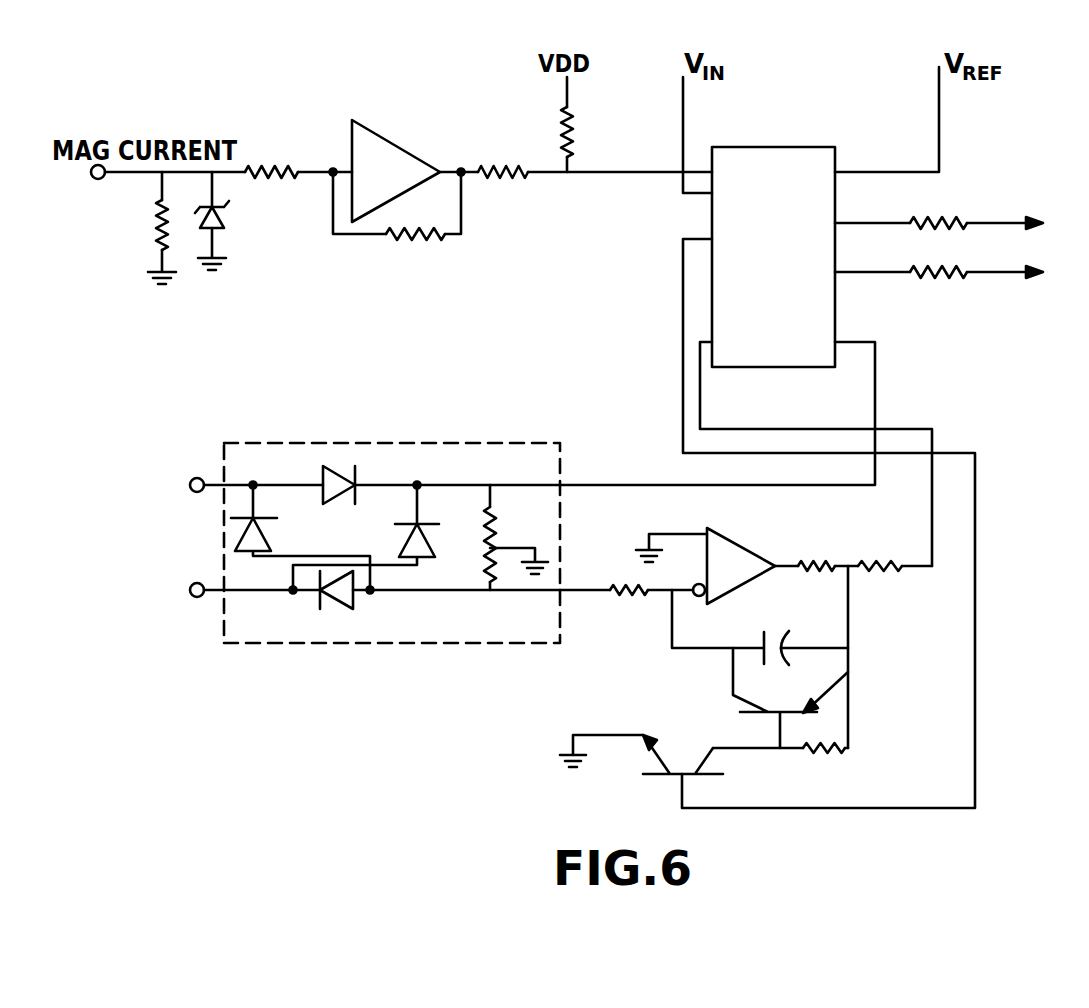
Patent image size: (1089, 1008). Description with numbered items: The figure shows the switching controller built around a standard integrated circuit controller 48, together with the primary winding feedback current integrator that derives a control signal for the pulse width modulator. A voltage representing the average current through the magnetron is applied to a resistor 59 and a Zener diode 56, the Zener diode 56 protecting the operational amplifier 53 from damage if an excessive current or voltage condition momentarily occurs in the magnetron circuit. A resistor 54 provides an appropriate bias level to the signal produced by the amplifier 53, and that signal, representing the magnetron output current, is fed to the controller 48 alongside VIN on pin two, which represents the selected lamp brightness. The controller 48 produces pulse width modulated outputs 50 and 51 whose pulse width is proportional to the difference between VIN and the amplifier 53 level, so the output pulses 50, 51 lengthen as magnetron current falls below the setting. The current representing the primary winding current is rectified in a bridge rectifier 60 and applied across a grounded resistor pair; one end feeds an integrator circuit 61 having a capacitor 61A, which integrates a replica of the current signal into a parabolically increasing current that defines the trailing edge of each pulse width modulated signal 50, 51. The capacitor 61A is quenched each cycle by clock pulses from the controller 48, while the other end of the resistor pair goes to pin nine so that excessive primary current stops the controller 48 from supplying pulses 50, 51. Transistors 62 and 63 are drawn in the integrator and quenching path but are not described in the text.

The controller 48 is at (803, 261).
The pulse width modulated output 50 is at (900, 223).
The pulse width modulated output 51 is at (900, 276).
The operational amplifier 53 is at (419, 158).
The resistor 54 is at (568, 146).
The Zener diode 56 is at (212, 235).
The resistor 59 is at (160, 236).
The bridge rectifier 60 is at (538, 443).
The integrator circuit 61 is at (754, 553).
The capacitor 61A is at (781, 641).
The transistor 62 is at (750, 716).
The transistor 63 is at (664, 777).